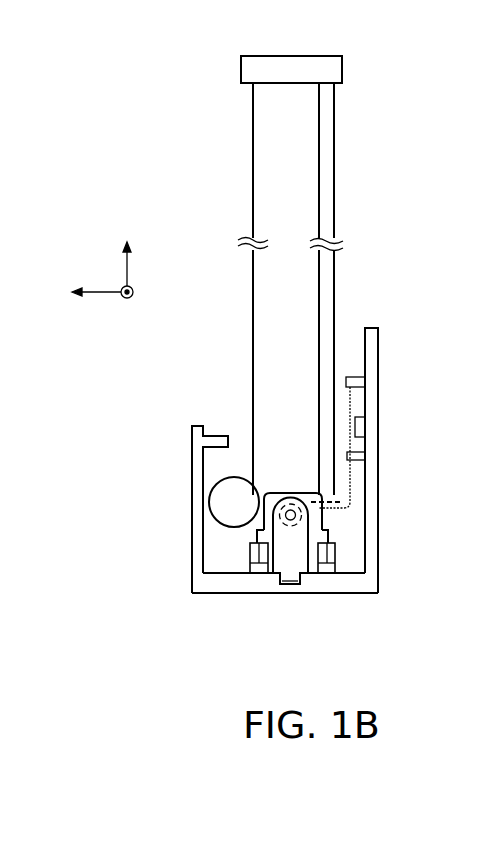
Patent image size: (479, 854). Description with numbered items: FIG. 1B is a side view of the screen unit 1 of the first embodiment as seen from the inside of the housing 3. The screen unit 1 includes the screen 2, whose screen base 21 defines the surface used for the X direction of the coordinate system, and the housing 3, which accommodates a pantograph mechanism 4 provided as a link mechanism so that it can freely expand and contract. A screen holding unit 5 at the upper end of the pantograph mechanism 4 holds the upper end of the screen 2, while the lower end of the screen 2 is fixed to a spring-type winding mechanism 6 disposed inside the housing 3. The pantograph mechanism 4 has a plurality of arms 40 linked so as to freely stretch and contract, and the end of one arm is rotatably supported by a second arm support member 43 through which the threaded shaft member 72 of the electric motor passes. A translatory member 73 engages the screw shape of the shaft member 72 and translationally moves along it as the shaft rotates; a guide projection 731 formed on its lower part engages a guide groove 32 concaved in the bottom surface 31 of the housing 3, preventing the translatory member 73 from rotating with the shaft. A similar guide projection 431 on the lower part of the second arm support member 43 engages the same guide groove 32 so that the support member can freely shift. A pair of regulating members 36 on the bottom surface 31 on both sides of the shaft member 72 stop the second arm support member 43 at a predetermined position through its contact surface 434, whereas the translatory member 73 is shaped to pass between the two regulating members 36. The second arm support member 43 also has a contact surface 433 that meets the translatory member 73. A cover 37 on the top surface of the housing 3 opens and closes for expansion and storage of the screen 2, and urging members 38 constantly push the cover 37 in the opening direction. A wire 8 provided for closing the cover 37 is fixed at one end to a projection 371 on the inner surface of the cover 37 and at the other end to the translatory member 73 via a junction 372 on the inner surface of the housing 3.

The screen unit 1 is at (405, 231).
The screen 2 is at (252, 150).
The screen base 21 is at (253, 266).
The housing 3 is at (402, 522).
The pantograph mechanism 4 is at (353, 200).
The screen holding unit 5 is at (342, 68).
The spring-type winding mechanism 6 is at (226, 480).
The wire 8 is at (344, 502).
The bottom surface 31 is at (348, 575).
The guide groove 32 is at (279, 590).
The regulating members 36 is at (250, 553).
The cover 37 is at (378, 341).
The urging members 38 is at (360, 420).
The arms 40 is at (334, 127).
The second arm support member 43 is at (252, 498).
The shaft member 72 is at (292, 508).
The translatory member 73 is at (262, 525).
The projection 371 is at (355, 380).
The junction 372 is at (356, 460).
The guide projection 431 is at (290, 536).
The contact surface 433 is at (270, 490).
The contact surface 434 is at (256, 535).
The guide projection 731 is at (305, 590).